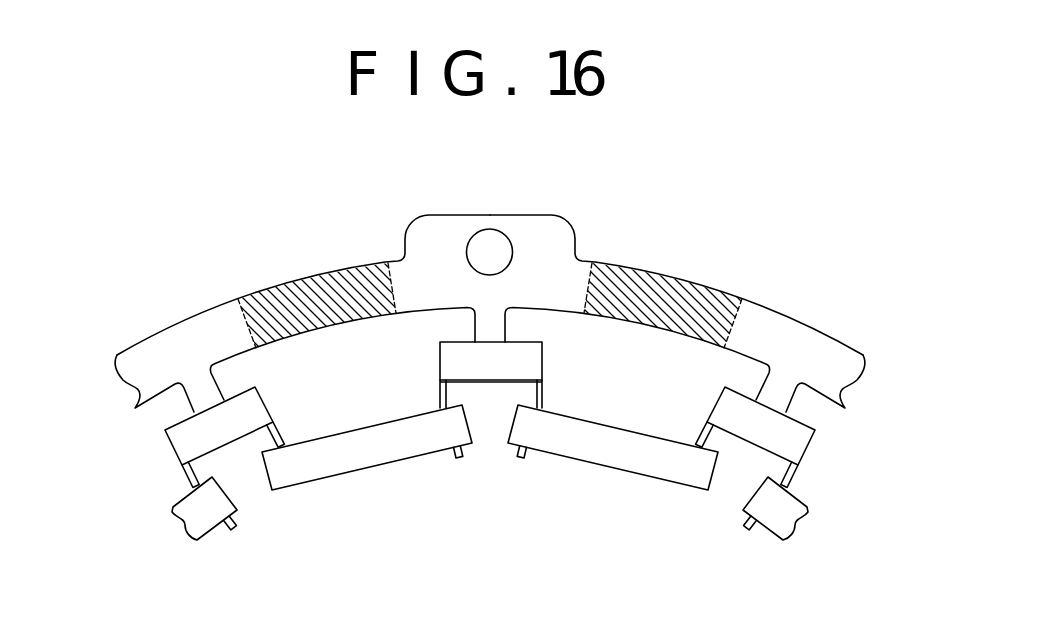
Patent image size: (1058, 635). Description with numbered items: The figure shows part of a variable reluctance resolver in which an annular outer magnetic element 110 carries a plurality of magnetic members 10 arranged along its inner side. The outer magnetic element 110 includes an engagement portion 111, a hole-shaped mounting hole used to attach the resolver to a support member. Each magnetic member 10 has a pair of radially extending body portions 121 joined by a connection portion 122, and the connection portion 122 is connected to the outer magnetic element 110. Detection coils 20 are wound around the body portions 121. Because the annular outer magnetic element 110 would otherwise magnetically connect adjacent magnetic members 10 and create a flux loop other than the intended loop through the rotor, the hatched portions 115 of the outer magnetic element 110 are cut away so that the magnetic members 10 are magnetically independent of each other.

The magnetic member 10 is at (226, 475).
The detection coil 20 is at (367, 457).
The outer magnetic element 110 is at (208, 328).
The engagement portion 111 is at (490, 243).
The portions to be removed 115 is at (313, 293).
The body portion 121 is at (440, 394).
The connection portion 122 is at (452, 354).